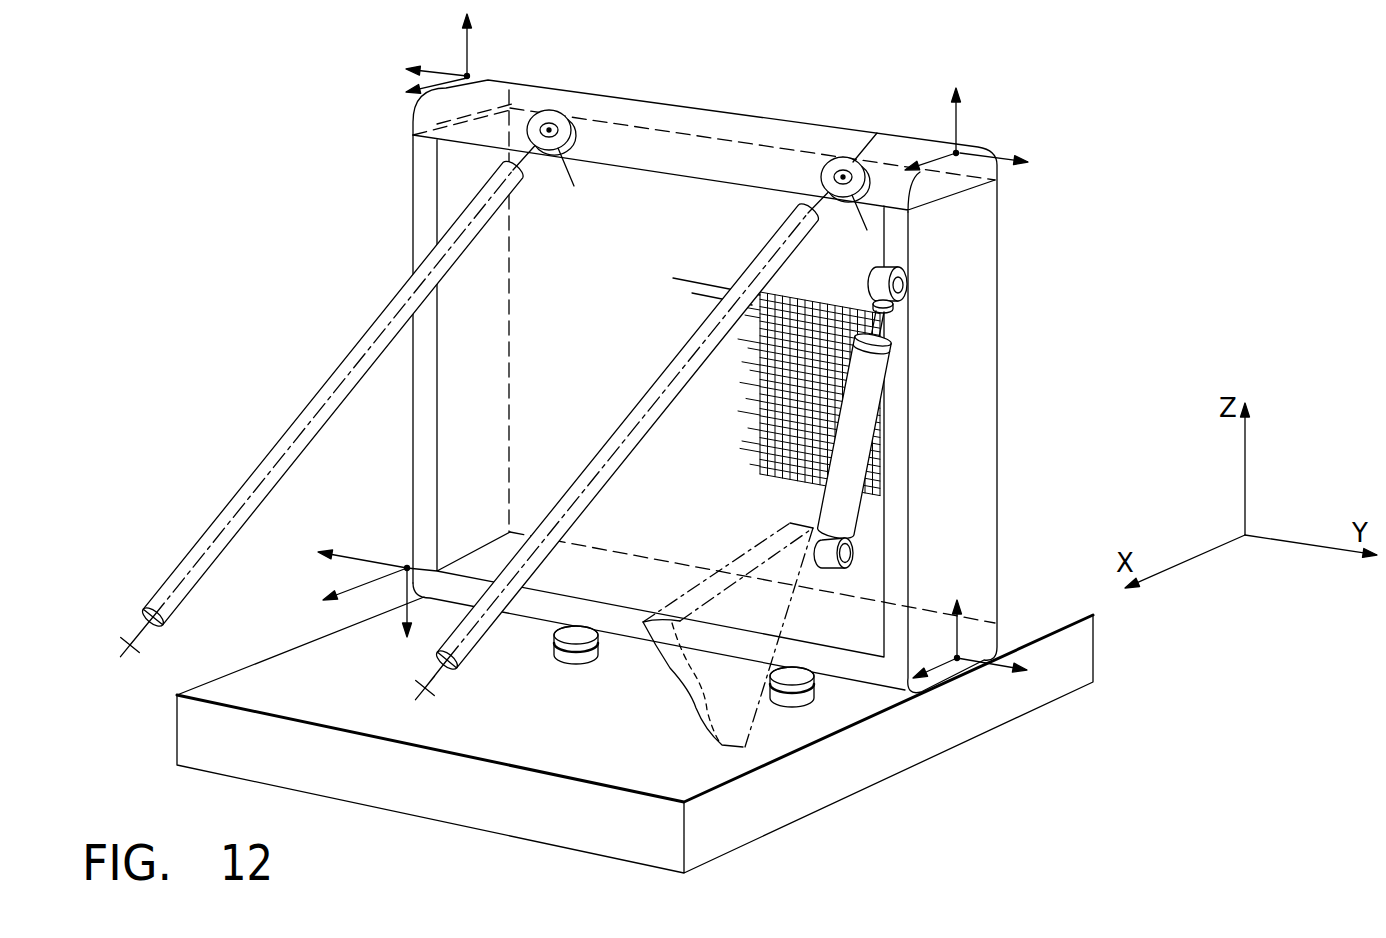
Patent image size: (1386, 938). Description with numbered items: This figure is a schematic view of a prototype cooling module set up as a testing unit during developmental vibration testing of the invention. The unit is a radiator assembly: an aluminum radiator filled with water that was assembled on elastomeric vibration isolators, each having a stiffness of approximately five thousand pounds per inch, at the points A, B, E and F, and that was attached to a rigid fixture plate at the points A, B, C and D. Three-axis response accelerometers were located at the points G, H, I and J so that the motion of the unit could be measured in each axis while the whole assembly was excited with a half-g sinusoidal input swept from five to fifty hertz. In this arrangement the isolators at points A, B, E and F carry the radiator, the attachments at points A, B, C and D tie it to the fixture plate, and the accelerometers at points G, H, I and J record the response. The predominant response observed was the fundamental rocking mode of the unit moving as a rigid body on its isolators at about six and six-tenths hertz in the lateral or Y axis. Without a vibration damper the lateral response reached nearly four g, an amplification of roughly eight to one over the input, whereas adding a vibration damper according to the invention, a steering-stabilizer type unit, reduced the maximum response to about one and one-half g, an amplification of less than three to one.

The isolator and attachment point A is at (577, 602).
The isolator and attachment point B is at (792, 645).
The fixture attachment point C is at (335, 406).
The fixture attachment point D is at (617, 448).
The isolator point E is at (545, 120).
The isolator point F is at (837, 159).
The accelerometer location G is at (439, 53).
The accelerometer location H is at (966, 129).
The accelerometer location I is at (365, 583).
The accelerometer location J is at (970, 654).